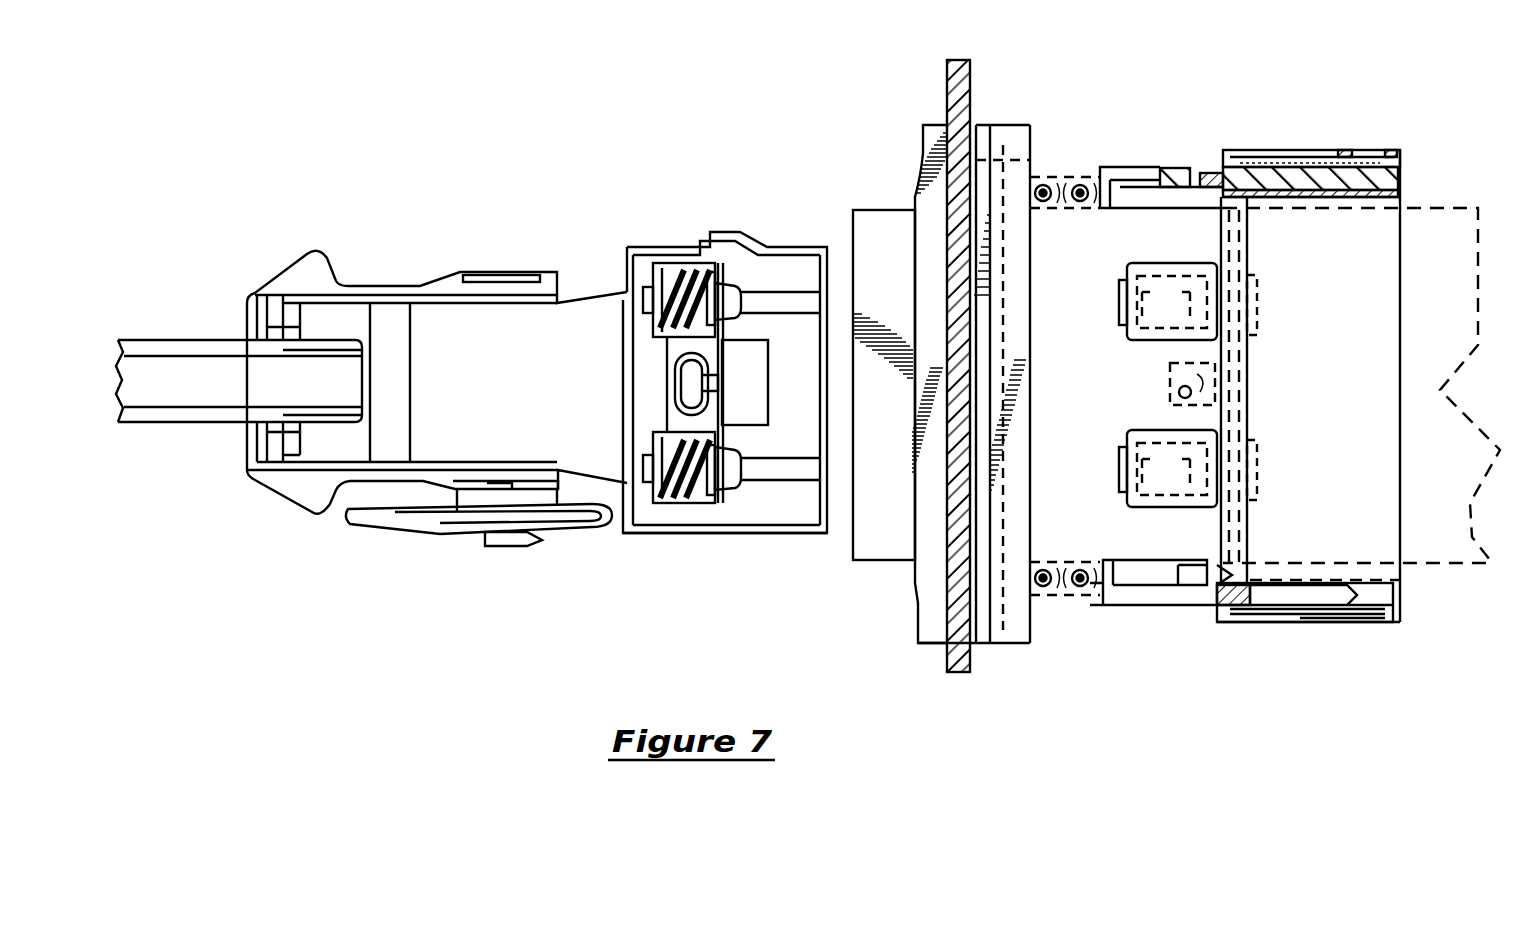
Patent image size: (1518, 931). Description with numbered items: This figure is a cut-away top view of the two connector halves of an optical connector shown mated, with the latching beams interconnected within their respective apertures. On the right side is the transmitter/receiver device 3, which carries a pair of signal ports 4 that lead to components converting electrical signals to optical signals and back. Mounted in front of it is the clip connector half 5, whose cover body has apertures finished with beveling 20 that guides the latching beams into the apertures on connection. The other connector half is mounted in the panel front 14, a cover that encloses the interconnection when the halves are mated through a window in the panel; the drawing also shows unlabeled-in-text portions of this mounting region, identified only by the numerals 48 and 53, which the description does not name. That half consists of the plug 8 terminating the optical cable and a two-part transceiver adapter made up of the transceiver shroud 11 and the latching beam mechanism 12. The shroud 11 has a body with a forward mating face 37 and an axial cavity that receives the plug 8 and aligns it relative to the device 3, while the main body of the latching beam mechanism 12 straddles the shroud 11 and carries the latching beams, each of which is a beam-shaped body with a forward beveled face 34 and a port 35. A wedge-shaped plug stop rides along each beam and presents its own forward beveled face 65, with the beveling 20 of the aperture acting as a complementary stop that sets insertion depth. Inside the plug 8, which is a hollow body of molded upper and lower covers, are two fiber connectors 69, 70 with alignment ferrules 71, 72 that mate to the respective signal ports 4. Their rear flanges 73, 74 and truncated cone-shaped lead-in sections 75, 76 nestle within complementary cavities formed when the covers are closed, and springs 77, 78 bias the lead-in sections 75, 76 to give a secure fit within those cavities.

The transmitter/receiver device 3 is at (1433, 190).
The signal ports 4 is at (1127, 300).
The clip connector half 5 is at (1425, 525).
The plug 8 is at (362, 282).
The transceiver shroud 11 is at (878, 210).
The latching beam mechanism 12 is at (980, 124).
The panel front 14 is at (947, 94).
The beveling 20 is at (1248, 200).
The forward beveled face 34 is at (1355, 180).
The port 35 is at (1250, 180).
The forward mating face 37 is at (1225, 397).
The spacer 48 is at (1028, 125).
The flange 53 is at (920, 152).
The forward beveled face 65 is at (1208, 182).
The fiber connector 69 is at (680, 288).
The fiber connector 70 is at (672, 497).
The alignment ferrule 71 is at (782, 290).
The alignment ferrule 72 is at (757, 490).
The rear flange 73 is at (660, 266).
The rear flange 74 is at (666, 497).
The truncated cone-shaped lead-in section 75 is at (735, 323).
The truncated cone-shaped lead-in section 76 is at (730, 440).
The spring 77 is at (692, 288).
The spring 78 is at (688, 497).